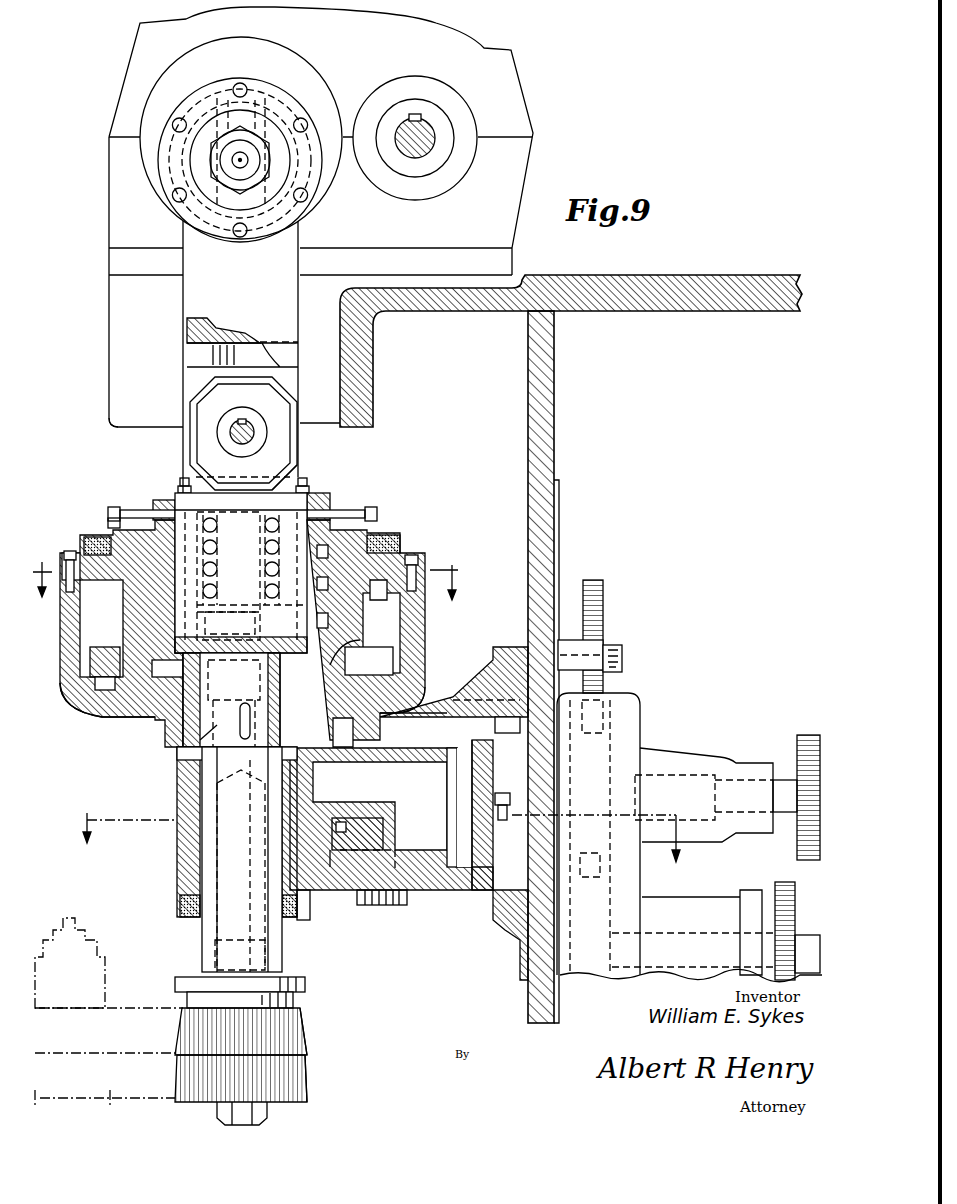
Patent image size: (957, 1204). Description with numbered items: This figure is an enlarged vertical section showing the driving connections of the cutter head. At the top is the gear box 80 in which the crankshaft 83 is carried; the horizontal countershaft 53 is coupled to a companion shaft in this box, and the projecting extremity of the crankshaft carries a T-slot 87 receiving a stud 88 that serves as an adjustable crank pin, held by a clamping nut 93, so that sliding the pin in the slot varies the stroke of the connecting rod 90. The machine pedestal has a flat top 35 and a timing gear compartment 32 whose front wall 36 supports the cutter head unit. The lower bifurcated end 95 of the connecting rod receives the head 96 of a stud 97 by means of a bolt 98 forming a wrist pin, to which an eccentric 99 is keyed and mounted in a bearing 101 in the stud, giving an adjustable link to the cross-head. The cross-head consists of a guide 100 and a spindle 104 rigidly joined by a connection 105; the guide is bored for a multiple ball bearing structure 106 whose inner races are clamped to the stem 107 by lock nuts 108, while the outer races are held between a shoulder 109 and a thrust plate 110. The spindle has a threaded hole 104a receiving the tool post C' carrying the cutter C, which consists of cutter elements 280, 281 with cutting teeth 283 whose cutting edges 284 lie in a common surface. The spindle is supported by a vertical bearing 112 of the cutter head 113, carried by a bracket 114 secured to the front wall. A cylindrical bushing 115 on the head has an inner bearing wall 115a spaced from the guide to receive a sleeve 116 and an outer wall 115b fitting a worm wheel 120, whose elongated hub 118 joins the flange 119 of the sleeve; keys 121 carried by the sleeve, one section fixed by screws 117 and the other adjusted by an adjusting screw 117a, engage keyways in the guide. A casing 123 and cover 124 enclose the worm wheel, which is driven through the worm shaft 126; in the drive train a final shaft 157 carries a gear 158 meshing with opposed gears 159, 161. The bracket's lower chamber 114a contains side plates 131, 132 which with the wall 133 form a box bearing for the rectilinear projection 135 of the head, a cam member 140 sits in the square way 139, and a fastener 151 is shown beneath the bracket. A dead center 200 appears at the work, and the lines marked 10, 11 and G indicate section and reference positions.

The gear box 80 is at (534, 171).
The crankshaft 83 is at (218, 114).
The T-slot 87 is at (192, 104).
The clamping nut 93 is at (230, 145).
The stud 88 is at (233, 157).
The horizontal countershaft 53 is at (434, 137).
The connecting rod 90 is at (240, 357).
The timing gear compartment 32 is at (571, 636).
The flat top 35 is at (683, 276).
The front wall 36 is at (528, 413).
The bifurcated end 95 is at (190, 369).
The eccentric 99 is at (224, 418).
The head 96 is at (168, 490).
The bolt 98 is at (232, 438).
The bearing 101 is at (266, 425).
The stud 97 is at (292, 462).
The adjusting screw 117a is at (305, 476).
The thrust plate 110 is at (320, 495).
The guide 100 is at (148, 494).
The stem 107 is at (241, 572).
The multiple ball bearing structure 106 is at (322, 505).
The flange 119 is at (112, 522).
The elongated hub 118 is at (85, 548).
The cover 124 is at (340, 600).
The sleeve 116 is at (400, 540).
The shoulder 109 is at (300, 588).
The section line 10 is at (254, 587).
The cylindrical bushing 115 is at (335, 637).
The inner bearing wall 115a is at (310, 650).
The outer wall 115b is at (305, 660).
The screws 117 is at (352, 613).
The keys 121 is at (369, 661).
The gear 159 is at (598, 582).
The worm shaft 126 is at (625, 658).
The chamber 114a is at (460, 746).
The gear 158 is at (612, 762).
The final shaft 157 is at (782, 780).
The casing 123 is at (77, 696).
The worm wheel 120 is at (103, 713).
The lock nuts 108 is at (231, 700).
The wall 133 is at (388, 762).
The rectilinear projection 135 is at (391, 804).
The cam member 140 is at (370, 842).
The connection 105 is at (180, 786).
The cutter head 113 is at (176, 855).
The spindle 104 is at (200, 878).
The vertical bearing 112 is at (200, 888).
The threaded hole 104a is at (212, 955).
The dead center 200 is at (72, 918).
The square way 139 is at (335, 905).
The nut 151 is at (360, 905).
The side plate 131 is at (470, 890).
The side plate 132 is at (488, 890).
The bracket 114 is at (505, 945).
The gear 161 is at (600, 982).
The section line 11 is at (386, 845).
The tool post C' is at (262, 992).
The cutter C is at (360, 1028).
The cutter element 280 is at (310, 1052).
The cutting edges 284 is at (306, 1062).
The cutter element 281 is at (310, 1098).
The cutting teeth 283 is at (283, 1105).
The gear line G is at (67, 1057).